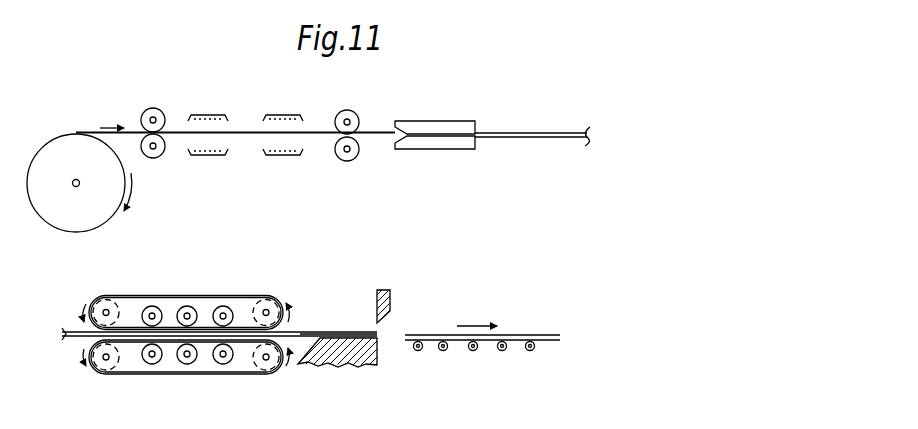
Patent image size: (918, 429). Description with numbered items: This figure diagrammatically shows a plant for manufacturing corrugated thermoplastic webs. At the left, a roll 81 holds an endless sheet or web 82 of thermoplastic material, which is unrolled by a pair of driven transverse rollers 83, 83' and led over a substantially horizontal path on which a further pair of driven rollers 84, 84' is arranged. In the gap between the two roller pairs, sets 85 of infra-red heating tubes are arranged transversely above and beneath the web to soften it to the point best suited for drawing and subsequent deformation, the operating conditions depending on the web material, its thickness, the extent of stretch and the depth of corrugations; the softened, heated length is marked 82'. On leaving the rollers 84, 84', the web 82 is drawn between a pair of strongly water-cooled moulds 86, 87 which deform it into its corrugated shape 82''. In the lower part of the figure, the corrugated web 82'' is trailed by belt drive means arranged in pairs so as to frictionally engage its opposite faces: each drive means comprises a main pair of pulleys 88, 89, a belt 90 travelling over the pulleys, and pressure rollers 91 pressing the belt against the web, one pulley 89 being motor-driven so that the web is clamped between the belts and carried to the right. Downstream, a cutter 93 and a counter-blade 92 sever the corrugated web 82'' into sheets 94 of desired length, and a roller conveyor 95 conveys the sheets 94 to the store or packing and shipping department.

The roll 81 is at (88, 217).
The web 82 is at (339, 102).
The web after heating 82' is at (257, 164).
The corrugated web 82'' is at (326, 212).
The driven transverse roller 83 is at (154, 102).
The driven transverse roller 83' is at (163, 163).
The driven roller 84 is at (365, 106).
The driven roller 84' is at (359, 165).
The set of infra-red heating tubes 85 is at (208, 113).
The mould 86 is at (433, 125).
The mould 87 is at (433, 145).
The pulley 88 is at (110, 305).
The pulley 89 is at (272, 305).
The belt 90 is at (184, 296).
The pressure rollers 91 is at (150, 364).
The pressure rollers / counter-blade 92 is at (378, 359).
The cutter 93 is at (389, 298).
The sheets 94 is at (518, 334).
The roller conveyor 95 is at (472, 356).